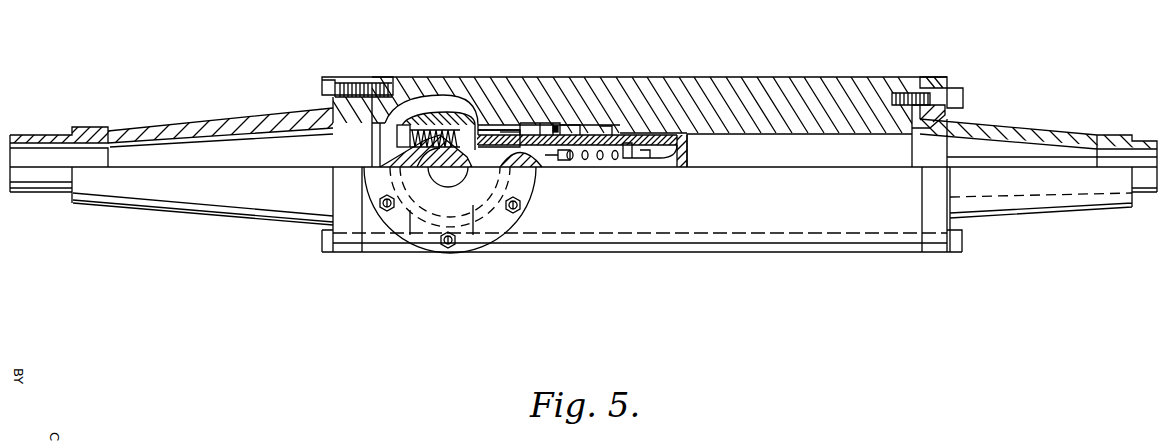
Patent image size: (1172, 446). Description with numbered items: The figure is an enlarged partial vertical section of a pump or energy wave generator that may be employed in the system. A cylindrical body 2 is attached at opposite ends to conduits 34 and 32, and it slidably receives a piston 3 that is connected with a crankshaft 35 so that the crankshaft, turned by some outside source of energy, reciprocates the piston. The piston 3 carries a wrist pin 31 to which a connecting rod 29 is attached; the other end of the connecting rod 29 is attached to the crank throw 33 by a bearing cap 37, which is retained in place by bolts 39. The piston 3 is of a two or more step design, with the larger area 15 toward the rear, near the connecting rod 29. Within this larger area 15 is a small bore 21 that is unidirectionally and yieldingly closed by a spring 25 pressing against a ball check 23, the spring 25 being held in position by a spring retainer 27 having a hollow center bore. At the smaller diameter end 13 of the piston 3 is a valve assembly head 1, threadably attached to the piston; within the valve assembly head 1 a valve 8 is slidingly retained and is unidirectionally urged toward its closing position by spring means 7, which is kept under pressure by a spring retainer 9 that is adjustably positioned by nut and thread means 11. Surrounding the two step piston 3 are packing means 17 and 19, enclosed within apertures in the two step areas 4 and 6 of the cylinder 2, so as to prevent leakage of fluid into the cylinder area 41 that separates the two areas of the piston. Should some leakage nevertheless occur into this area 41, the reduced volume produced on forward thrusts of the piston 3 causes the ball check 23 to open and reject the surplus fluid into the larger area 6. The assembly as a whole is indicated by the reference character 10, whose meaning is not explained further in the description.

The valve assembly head 1 is at (680, 88).
The cylindrical body 2 is at (850, 254).
The piston 3 is at (598, 133).
The two step area of cylinder 4 is at (904, 151).
The two step area of cylinder (larger area) 6 is at (380, 147).
The spring means 7 is at (604, 160).
The valve 8 is at (688, 158).
The spring retainer 9 is at (578, 167).
The assembly 10 is at (705, 268).
The nut and thread means 11 is at (566, 167).
The smaller diameter end 13 is at (603, 133).
The larger area 15 is at (567, 124).
The packing means 17 is at (640, 132).
The packing means 19 is at (553, 122).
The small bore 21 is at (543, 121).
The ball check 23 is at (527, 123).
The spring 25 is at (508, 125).
The spring retainer 27 is at (493, 121).
The connecting rod 29 is at (443, 153).
The wrist pin 31 is at (455, 212).
The conduit 32 is at (993, 150).
The crank throw 33 is at (431, 162).
The conduit 34 is at (263, 147).
The crankshaft 35 is at (454, 184).
The bearing cap 37 is at (448, 210).
The bolts 39 is at (402, 127).
The cylinder area 41 is at (593, 124).